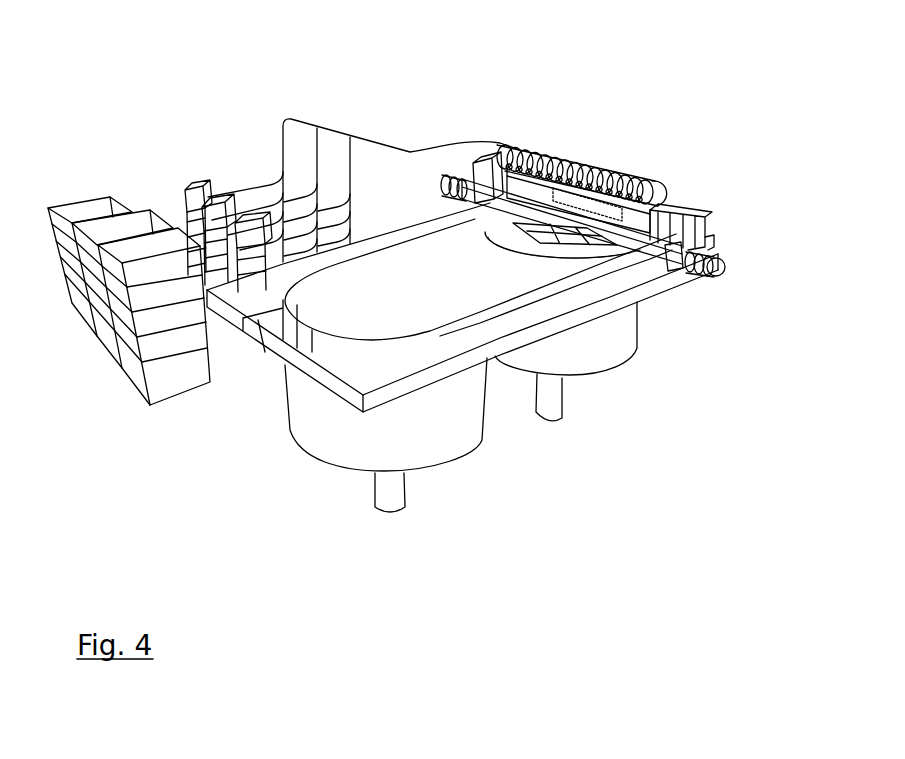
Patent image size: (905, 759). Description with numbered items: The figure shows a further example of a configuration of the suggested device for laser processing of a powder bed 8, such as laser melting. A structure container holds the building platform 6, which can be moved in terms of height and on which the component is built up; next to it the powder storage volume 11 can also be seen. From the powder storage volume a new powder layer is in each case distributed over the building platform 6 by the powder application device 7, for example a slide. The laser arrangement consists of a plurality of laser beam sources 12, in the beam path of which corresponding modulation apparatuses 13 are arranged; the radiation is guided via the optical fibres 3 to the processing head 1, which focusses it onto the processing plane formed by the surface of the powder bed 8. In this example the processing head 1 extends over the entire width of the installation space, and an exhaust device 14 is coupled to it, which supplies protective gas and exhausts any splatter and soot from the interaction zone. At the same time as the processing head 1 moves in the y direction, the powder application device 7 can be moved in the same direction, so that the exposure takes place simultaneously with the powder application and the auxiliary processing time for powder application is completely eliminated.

The processing head 1 is at (577, 177).
The optical fibres 3 is at (405, 150).
The building platform 6 is at (553, 392).
The powder application device 7 is at (683, 214).
The powder bed 8 is at (318, 307).
The powder storage volume 11 is at (335, 437).
The laser beam sources 12 is at (82, 212).
The modulation apparatuses 13 is at (193, 196).
The exhaust device 14 is at (712, 258).